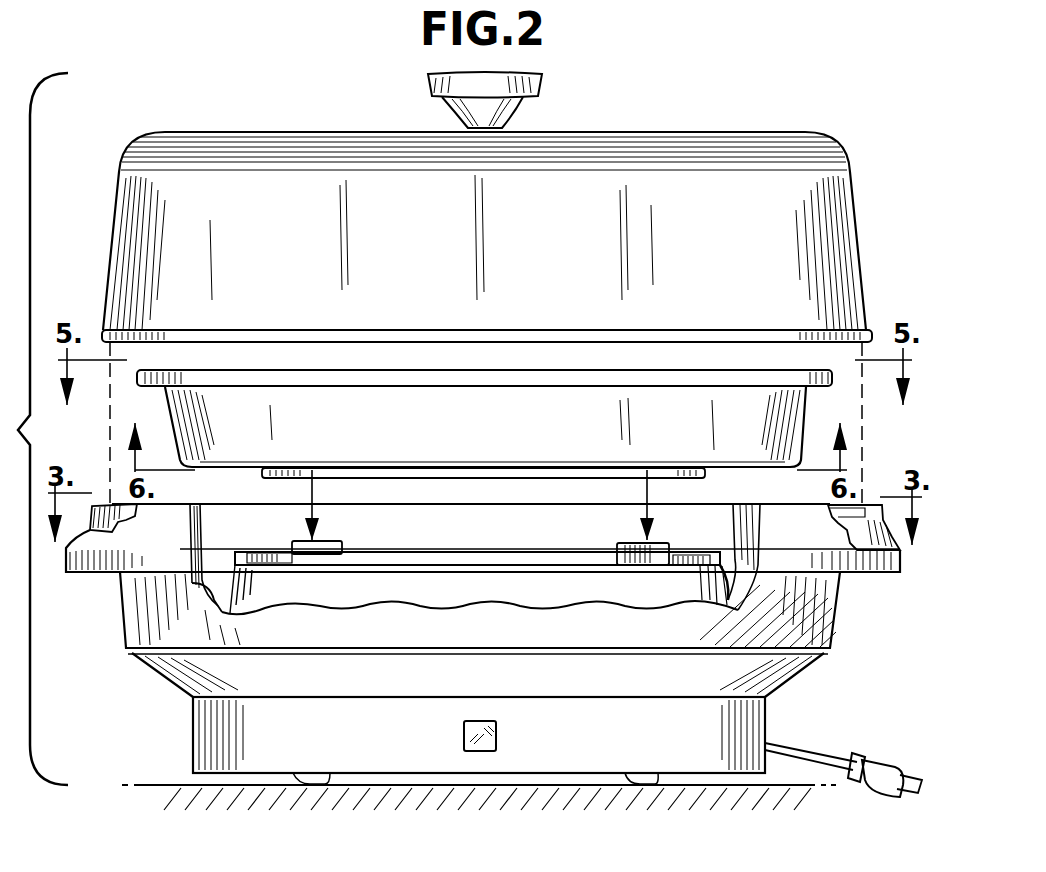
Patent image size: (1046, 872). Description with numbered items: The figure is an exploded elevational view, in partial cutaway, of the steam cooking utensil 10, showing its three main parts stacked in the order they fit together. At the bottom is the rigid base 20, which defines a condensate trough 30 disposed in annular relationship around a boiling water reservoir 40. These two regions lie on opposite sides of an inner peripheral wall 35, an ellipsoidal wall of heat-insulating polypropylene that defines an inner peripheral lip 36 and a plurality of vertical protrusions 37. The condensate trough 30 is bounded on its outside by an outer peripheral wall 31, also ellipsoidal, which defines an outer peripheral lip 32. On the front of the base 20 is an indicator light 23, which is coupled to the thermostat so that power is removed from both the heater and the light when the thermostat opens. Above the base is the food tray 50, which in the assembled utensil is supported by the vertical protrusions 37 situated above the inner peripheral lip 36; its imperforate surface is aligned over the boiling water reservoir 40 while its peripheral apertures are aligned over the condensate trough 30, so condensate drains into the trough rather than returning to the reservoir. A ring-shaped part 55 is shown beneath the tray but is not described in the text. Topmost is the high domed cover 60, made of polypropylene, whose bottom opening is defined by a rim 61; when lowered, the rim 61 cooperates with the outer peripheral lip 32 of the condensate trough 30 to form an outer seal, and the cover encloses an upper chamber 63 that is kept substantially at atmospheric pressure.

The steam cooking utensil 10 is at (108, 174).
The rigid base 20 is at (180, 730).
The indicator light 23 is at (497, 742).
The condensate trough 30 is at (192, 583).
The outer peripheral wall 31 is at (120, 632).
The outer peripheral lip 32 is at (108, 504).
The inner peripheral wall 35 is at (692, 555).
The inner peripheral lip 36 is at (724, 566).
The vertical protrusions 37 is at (325, 550).
The boiling water reservoir 40 is at (457, 574).
The food tray 50 is at (740, 469).
The pan bottom ring 55 is at (268, 480).
The high domed cover 60 is at (850, 218).
The rim 61 is at (866, 332).
The upper chamber 63 is at (420, 297).